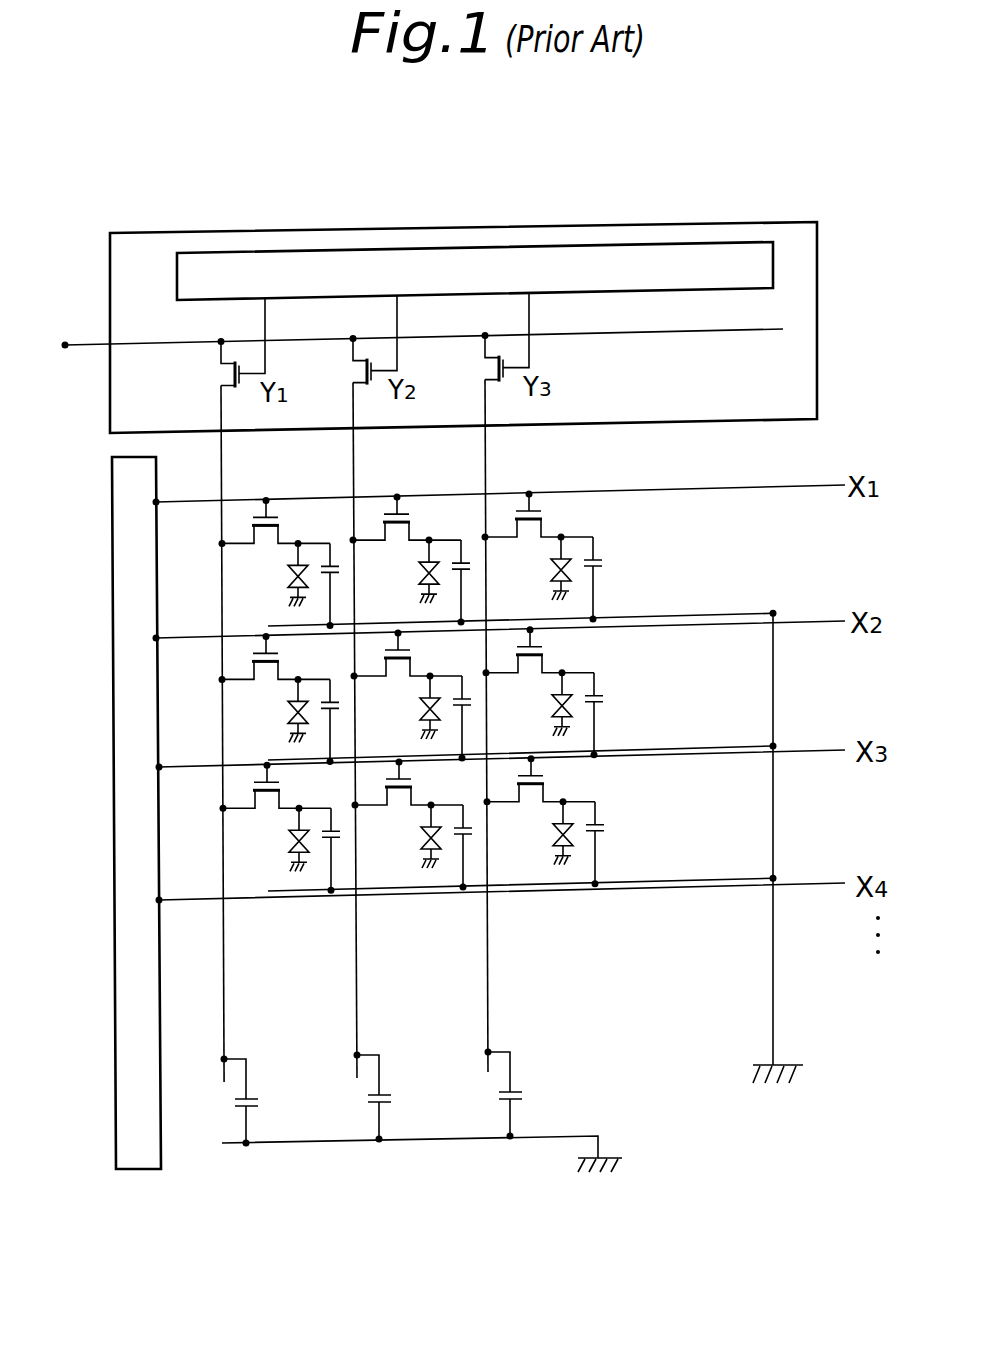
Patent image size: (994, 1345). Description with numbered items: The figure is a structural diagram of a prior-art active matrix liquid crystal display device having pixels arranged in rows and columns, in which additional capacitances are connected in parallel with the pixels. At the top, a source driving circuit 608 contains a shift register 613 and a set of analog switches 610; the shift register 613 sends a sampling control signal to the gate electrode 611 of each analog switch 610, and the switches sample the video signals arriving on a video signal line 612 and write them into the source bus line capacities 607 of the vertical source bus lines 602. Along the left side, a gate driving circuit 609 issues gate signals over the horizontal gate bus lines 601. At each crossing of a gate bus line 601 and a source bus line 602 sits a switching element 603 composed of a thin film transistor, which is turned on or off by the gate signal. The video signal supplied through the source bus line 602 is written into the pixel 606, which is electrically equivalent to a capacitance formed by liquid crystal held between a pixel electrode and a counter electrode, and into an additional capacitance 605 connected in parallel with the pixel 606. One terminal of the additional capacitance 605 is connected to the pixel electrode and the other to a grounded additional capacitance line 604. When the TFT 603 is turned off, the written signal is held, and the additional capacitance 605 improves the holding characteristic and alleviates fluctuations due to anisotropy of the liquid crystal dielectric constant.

The gate bus line 601 is at (735, 488).
The source bus line 602 is at (503, 445).
The switching element (pixel TFT) 603 is at (543, 523).
The additional capacitance line 604 is at (652, 613).
The additional capacitance 605 is at (598, 557).
The pixel 606 is at (567, 556).
The source bus line capacity 607 is at (512, 1095).
The source driving circuit 608 is at (140, 245).
The gate driving circuit 609 is at (115, 548).
The analog switch 610 is at (490, 390).
The gate electrode 611 is at (530, 352).
The video signal line 612 is at (104, 348).
The shift register 613 is at (555, 253).